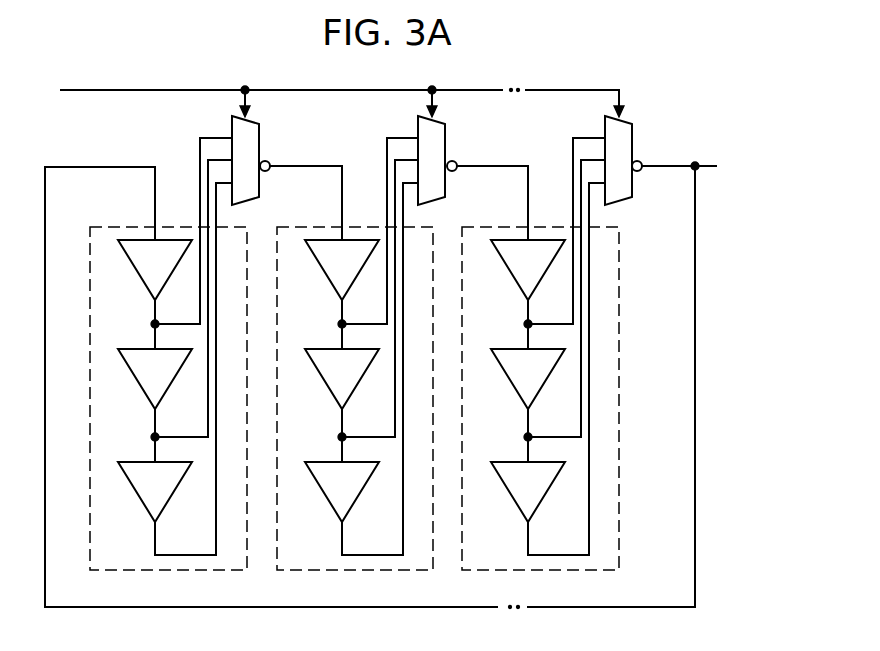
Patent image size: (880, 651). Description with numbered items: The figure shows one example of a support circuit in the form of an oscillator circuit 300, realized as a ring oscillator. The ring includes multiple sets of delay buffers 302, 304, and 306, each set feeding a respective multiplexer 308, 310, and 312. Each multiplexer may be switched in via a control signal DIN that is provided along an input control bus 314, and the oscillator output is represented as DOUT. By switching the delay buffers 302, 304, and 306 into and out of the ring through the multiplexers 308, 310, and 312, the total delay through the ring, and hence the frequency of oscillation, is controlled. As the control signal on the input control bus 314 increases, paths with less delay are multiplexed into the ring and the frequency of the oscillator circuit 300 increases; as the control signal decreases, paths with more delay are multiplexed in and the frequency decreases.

The oscillator circuit 300 is at (728, 100).
The set of delay buffers 302 is at (98, 226).
The set of delay buffers 304 is at (415, 572).
The set of delay buffers 306 is at (621, 308).
The multiplexer 308 is at (260, 150).
The multiplexer 310 is at (447, 150).
The multiplexer 312 is at (633, 143).
The input control bus 314 is at (567, 89).